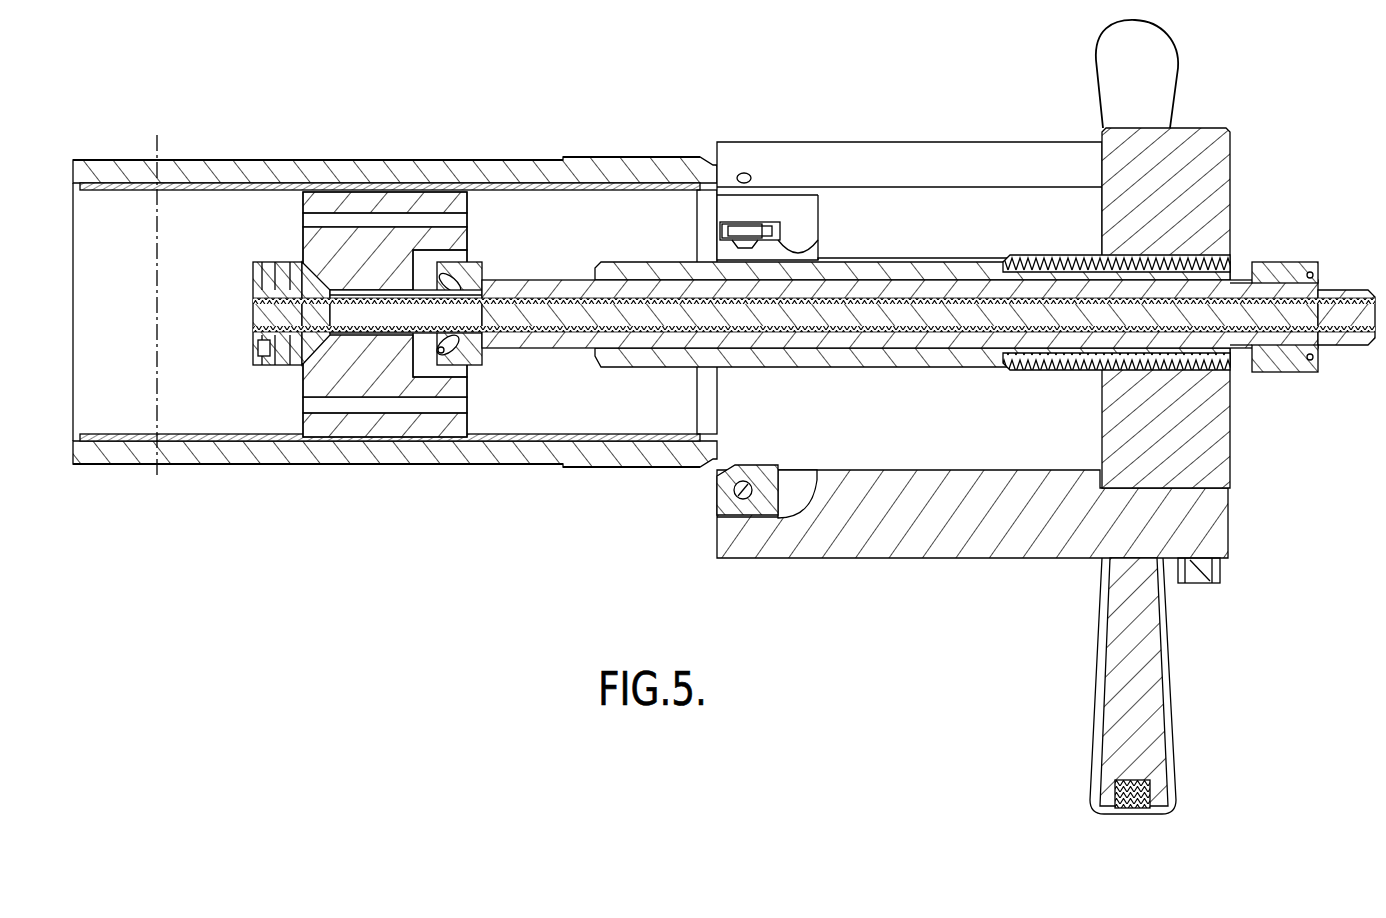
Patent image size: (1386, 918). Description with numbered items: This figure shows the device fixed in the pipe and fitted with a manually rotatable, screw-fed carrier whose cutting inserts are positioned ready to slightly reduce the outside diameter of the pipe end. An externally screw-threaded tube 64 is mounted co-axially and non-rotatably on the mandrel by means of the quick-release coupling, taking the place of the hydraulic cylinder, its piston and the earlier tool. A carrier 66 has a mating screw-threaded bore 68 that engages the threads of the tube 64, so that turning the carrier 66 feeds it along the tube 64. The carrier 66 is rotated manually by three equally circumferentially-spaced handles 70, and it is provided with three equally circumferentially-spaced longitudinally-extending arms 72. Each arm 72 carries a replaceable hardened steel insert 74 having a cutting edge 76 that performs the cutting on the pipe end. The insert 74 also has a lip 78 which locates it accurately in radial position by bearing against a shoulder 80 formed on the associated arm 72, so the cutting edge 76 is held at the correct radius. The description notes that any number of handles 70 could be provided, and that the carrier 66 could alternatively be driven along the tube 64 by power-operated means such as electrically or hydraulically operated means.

The externally screw-threaded tube 64 is at (908, 370).
The carrier 66 is at (1213, 176).
The screw-threaded bore 68 is at (1088, 362).
The handle 70 is at (1098, 52).
The arm 72 is at (925, 200).
The replaceable hardened steel insert 74 is at (718, 226).
The cutting edge 76 is at (818, 250).
The lip 78 is at (760, 222).
The shoulder 80 is at (802, 207).